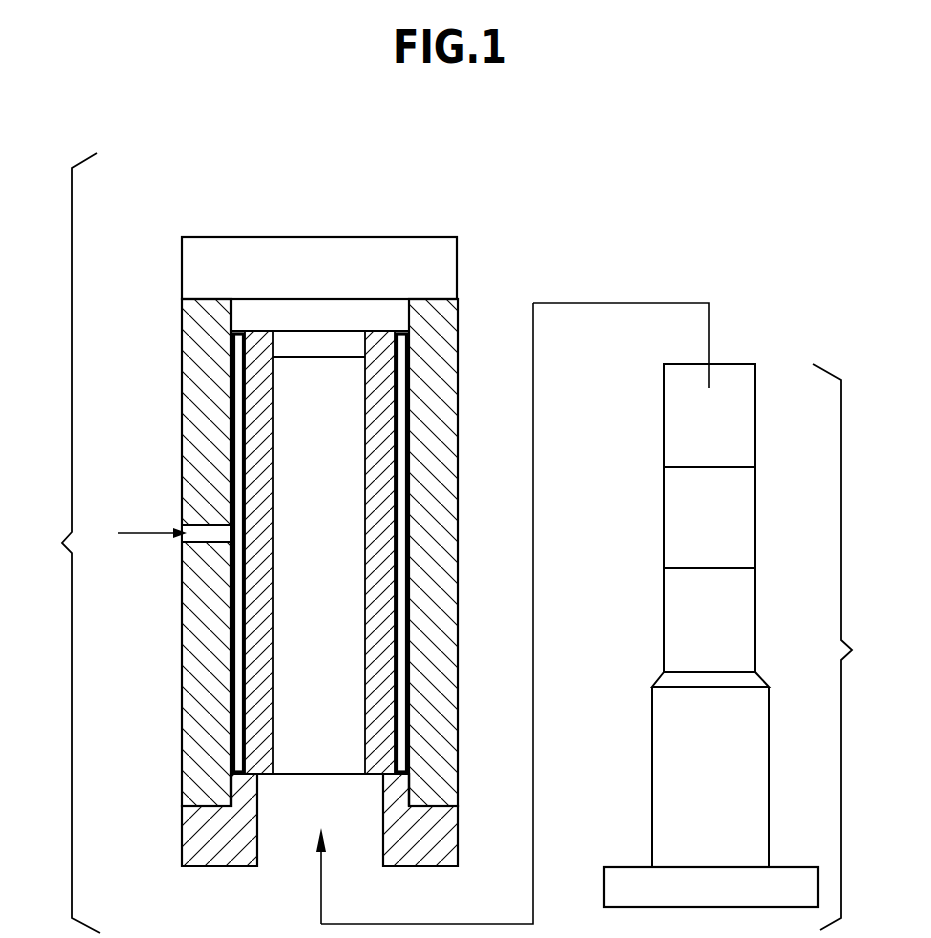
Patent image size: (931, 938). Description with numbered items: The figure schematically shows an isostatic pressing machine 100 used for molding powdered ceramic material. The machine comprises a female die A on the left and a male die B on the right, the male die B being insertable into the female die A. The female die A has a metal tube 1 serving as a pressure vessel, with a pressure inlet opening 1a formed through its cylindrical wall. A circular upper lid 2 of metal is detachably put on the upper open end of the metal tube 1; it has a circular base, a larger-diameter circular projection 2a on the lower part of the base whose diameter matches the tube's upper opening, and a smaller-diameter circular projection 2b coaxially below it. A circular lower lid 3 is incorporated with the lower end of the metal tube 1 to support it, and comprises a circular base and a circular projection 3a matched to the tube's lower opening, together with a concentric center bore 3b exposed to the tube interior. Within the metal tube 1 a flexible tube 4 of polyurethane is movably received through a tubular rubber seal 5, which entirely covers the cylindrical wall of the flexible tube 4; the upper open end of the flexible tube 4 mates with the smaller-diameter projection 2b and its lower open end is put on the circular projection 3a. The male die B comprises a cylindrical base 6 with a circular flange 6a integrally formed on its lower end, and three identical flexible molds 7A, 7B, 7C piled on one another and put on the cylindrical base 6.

The isostatic pressing machine 100 is at (595, 209).
The metal tube 1 is at (462, 494).
The pressure inlet opening 1a is at (208, 525).
The circular upper lid 2 is at (417, 253).
The larger-diameter circular projection 2a is at (287, 318).
The smaller-diameter circular projection 2b is at (320, 350).
The circular lower lid 3 is at (182, 843).
The circular projection 3a is at (400, 794).
The concentric center bore 3b is at (383, 822).
The flexible tube 4 is at (257, 605).
The tubular rubber seal 5 is at (400, 680).
The cylindrical base 6 is at (652, 768).
The circular flange 6a is at (623, 886).
The flexible mold 7A is at (683, 423).
The flexible mold 7B is at (683, 521).
The flexible mold 7C is at (683, 621).
The female die A is at (67, 543).
The male die B is at (844, 647).